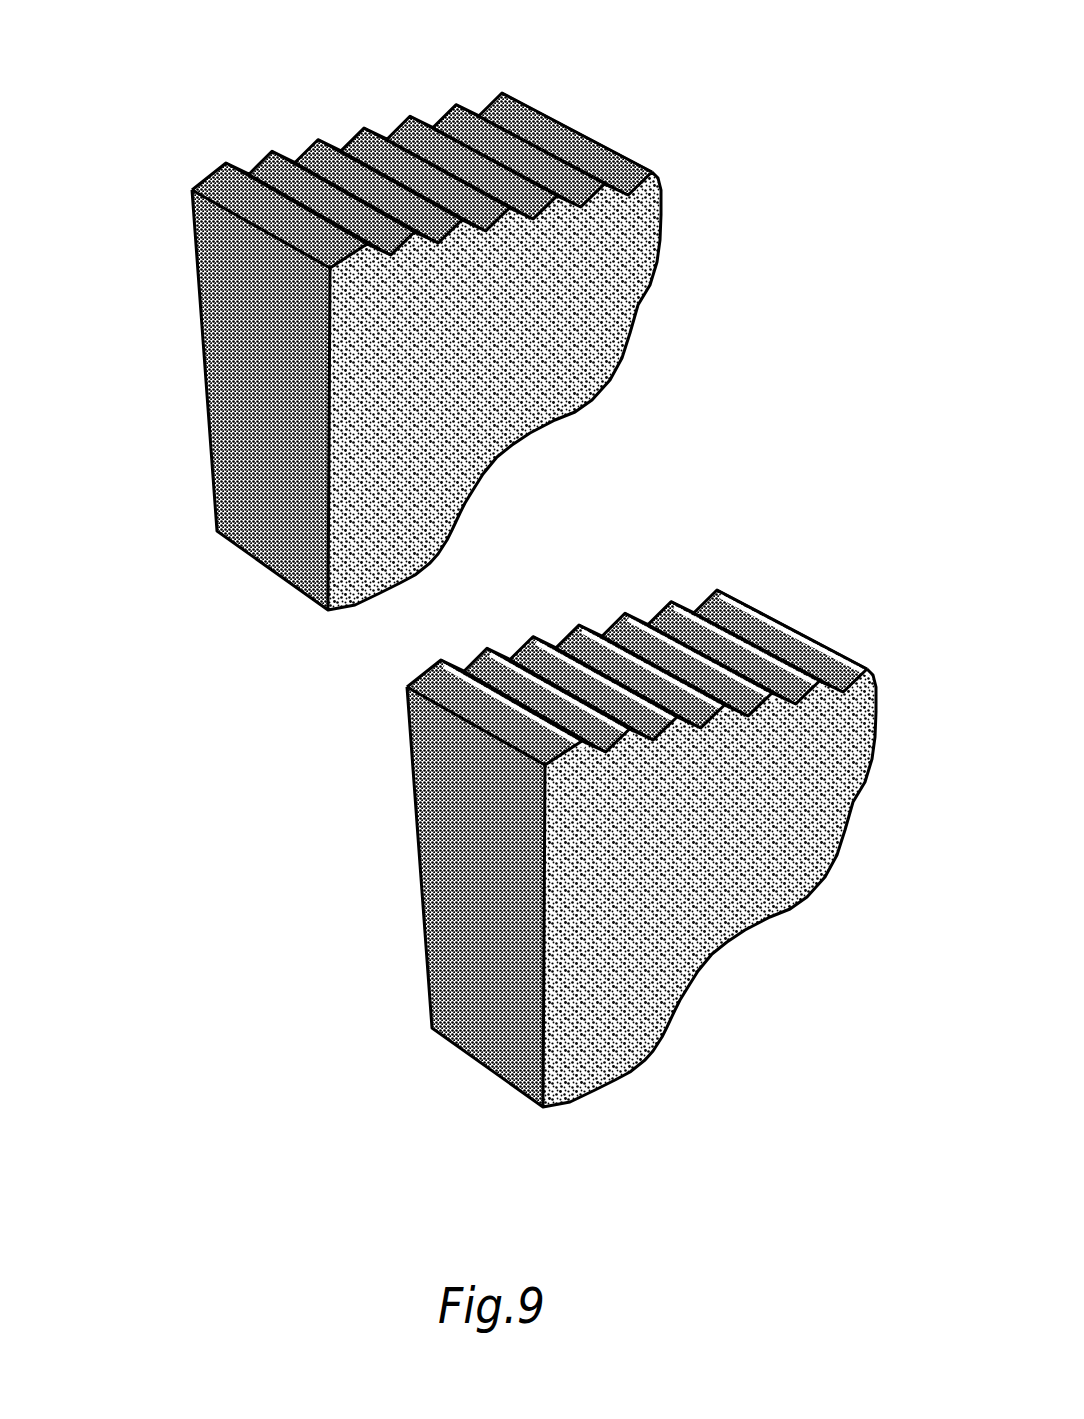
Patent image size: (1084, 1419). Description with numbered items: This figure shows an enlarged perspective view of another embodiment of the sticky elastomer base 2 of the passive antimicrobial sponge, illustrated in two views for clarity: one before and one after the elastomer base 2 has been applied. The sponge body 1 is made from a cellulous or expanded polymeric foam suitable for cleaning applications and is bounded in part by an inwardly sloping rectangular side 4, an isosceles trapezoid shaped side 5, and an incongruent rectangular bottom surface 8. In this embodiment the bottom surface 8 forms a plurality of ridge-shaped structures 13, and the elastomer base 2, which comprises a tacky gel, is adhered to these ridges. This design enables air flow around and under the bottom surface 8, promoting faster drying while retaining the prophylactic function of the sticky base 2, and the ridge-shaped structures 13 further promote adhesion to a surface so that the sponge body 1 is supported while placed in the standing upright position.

The sponge body 1 is at (552, 469).
The elastomer base 2 is at (765, 622).
The inwardly sloping rectangular side 4 is at (464, 363).
The isosceles trapezoid shaped side 5 is at (254, 391).
The bottom surface 8 is at (252, 198).
The ridge-shaped structures 13 is at (322, 131).